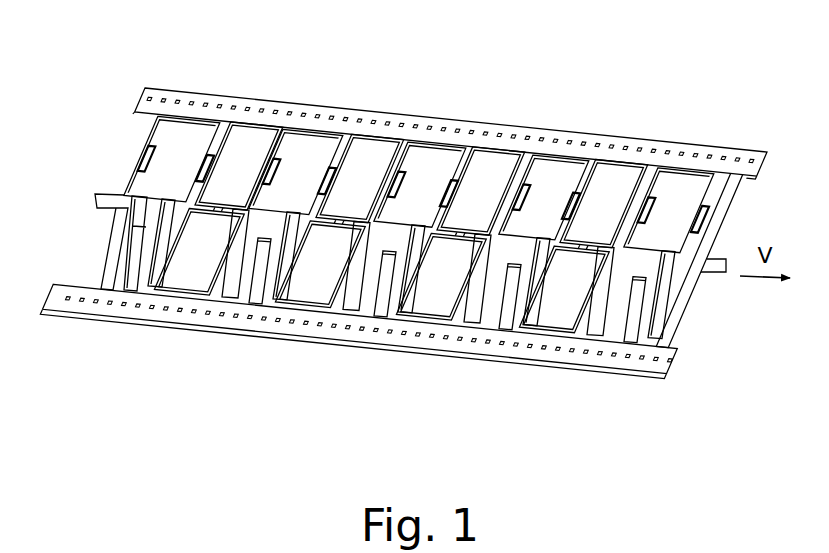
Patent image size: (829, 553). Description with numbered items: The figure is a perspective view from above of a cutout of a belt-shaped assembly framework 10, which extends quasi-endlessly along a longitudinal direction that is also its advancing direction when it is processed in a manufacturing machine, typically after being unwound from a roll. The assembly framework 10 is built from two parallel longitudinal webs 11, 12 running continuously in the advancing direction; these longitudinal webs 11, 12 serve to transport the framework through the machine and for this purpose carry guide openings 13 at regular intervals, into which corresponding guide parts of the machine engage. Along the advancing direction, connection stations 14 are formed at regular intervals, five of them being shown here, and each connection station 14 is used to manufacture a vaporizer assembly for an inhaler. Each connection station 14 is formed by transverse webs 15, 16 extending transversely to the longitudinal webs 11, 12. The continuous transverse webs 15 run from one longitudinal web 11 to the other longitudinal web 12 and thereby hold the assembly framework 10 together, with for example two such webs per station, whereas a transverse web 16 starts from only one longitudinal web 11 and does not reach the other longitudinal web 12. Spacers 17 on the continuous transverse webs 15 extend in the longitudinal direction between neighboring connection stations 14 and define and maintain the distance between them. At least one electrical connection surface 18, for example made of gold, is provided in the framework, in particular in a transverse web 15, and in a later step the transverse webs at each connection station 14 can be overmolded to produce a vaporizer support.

The assembly framework 10 is at (372, 402).
The longitudinal web 11 is at (430, 352).
The longitudinal web 12 is at (390, 104).
The guide openings 13 is at (308, 114).
The connection station 14 is at (234, 82).
The continuous transverse web 15 is at (97, 208).
The transverse web 16 is at (147, 213).
The spacer 17 is at (107, 192).
The electrical connection surface 18 is at (318, 160).